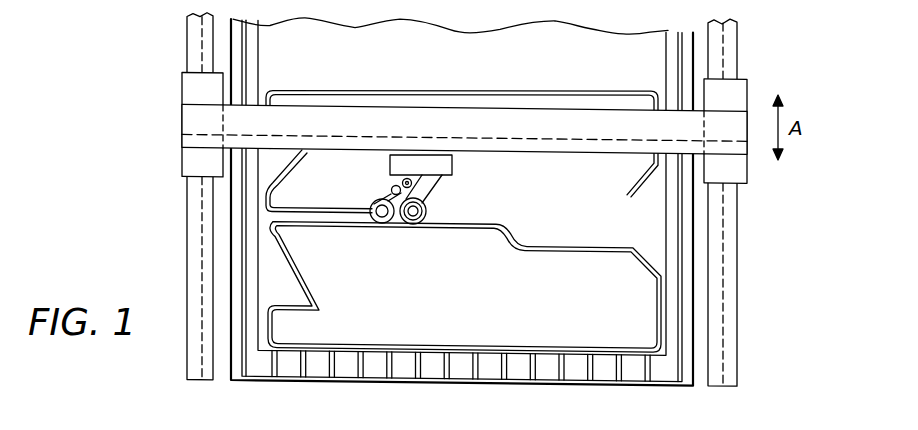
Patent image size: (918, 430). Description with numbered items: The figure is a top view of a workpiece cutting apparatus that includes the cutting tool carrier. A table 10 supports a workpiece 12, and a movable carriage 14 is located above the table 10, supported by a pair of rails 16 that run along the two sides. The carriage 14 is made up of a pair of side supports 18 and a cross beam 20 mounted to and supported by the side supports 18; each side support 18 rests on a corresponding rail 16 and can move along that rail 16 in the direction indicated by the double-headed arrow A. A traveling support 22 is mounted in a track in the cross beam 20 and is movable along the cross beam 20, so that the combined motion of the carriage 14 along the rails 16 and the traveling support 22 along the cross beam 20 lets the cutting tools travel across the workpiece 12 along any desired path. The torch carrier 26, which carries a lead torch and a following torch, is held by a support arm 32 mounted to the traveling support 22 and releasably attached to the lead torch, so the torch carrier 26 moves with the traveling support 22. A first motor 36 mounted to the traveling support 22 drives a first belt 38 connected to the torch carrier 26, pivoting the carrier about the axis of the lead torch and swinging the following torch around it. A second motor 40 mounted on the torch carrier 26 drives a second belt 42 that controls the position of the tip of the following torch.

The table 10 is at (613, 386).
The workpiece 12 is at (405, 352).
The movable carriage 14 is at (181, 78).
The rails 16 is at (187, 235).
The side supports 18 is at (182, 155).
The cross beam 20 is at (497, 105).
The traveling support 22 is at (453, 168).
The torch carrier 26 is at (372, 232).
The support arm 32 is at (432, 185).
The first motor 36 is at (396, 222).
The first belt 38 is at (400, 225).
The second motor 40 is at (402, 181).
The second belt 42 is at (391, 191).